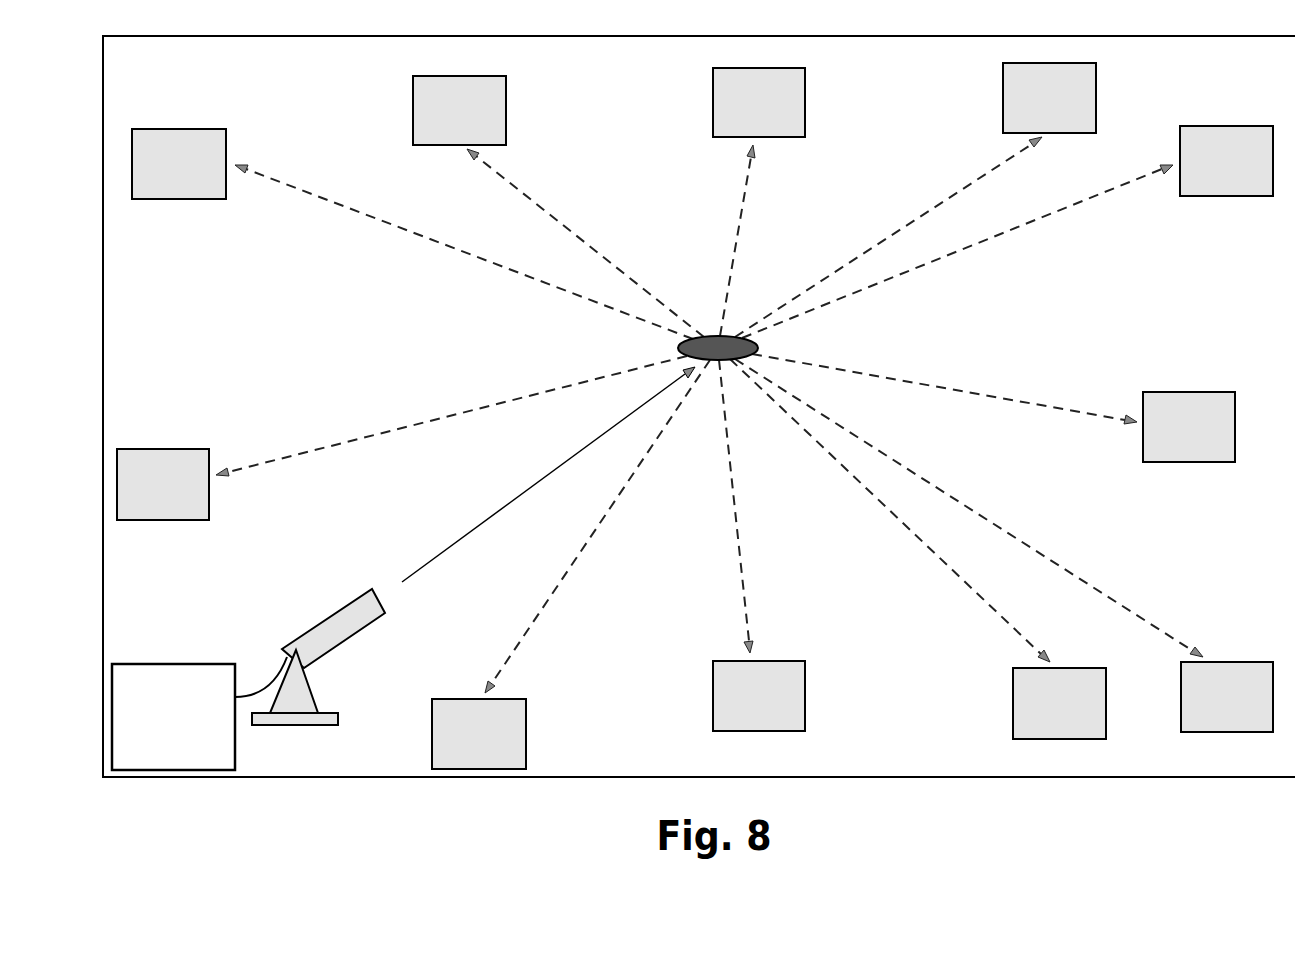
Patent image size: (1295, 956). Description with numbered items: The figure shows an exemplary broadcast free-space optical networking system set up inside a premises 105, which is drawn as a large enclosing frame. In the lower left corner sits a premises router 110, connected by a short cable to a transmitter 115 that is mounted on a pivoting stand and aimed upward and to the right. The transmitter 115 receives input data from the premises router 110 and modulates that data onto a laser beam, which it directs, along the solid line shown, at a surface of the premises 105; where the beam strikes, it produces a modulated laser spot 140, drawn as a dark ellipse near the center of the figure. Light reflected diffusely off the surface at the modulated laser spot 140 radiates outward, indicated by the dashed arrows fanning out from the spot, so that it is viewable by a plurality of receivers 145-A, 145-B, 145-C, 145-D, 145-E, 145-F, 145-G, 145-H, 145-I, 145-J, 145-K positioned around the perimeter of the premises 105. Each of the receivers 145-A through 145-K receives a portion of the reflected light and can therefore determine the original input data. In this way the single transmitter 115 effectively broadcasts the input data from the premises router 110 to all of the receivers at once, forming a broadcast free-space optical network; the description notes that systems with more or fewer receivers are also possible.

The premises 105 is at (578, 777).
The premises router 110 is at (199, 713).
The transmitter 115 is at (458, 546).
The modulated laser spot 140 is at (636, 340).
The receiver 145-A is at (179, 164).
The receiver 145-B is at (459, 110).
The receiver 145-C is at (759, 102).
The receiver 145-D is at (1049, 98).
The receiver 145-E is at (1226, 161).
The receiver 145-F is at (1189, 427).
The receiver 145-G is at (1227, 697).
The receiver 145-H is at (1059, 703).
The receiver 145-I is at (759, 696).
The receiver 145-J is at (479, 734).
The receiver 145-K is at (163, 484).